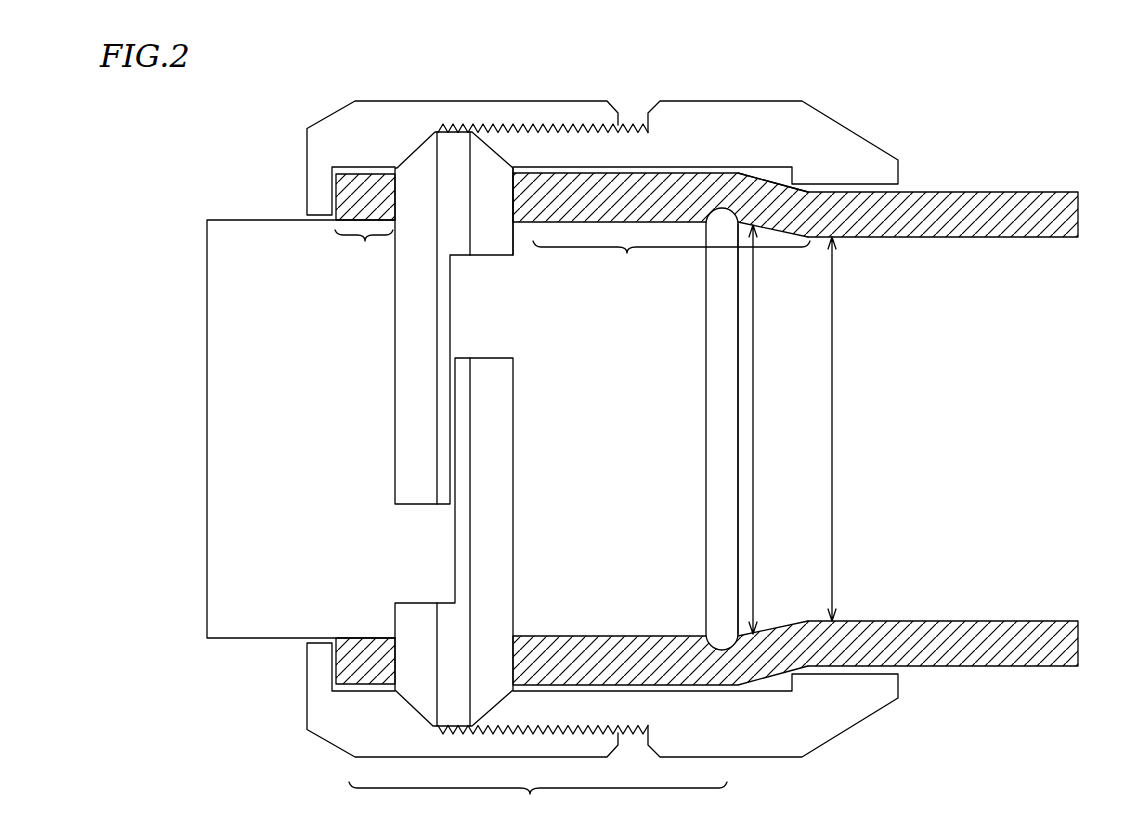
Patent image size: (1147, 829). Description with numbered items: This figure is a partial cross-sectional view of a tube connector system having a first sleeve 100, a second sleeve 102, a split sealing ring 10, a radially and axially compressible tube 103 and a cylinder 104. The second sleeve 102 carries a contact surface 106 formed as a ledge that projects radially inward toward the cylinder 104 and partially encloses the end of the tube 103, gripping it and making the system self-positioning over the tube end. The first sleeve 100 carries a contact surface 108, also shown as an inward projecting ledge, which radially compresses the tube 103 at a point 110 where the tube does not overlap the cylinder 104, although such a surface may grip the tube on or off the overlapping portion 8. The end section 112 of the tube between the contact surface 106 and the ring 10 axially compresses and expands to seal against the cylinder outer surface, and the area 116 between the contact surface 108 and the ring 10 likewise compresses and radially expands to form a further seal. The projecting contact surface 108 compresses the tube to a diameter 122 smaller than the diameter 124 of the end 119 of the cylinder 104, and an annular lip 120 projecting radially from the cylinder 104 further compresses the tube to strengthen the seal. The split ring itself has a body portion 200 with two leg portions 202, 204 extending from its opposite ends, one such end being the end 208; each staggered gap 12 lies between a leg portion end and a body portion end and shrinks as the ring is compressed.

The overlapping portion 8 is at (538, 803).
The split sealing ring 10 is at (512, 248).
The staggered gap 12 is at (470, 329).
The first sleeve 100 is at (763, 100).
The second sleeve 102 is at (412, 101).
The radially and axially compressible tube 103 is at (1018, 191).
The cylinder 104 is at (240, 218).
The contact surface 106 is at (318, 192).
The contact surface 108 is at (800, 178).
The point 110 is at (798, 193).
The end section 112 is at (364, 252).
The area 116 is at (671, 262).
The end 119 is at (738, 373).
The annular lip 120 is at (722, 443).
The diameter 122 is at (832, 407).
The diameter 124 is at (753, 460).
The body portion 200 is at (458, 238).
The leg portion 202 is at (410, 360).
The leg portion 204 is at (500, 455).
The end 208 is at (412, 602).